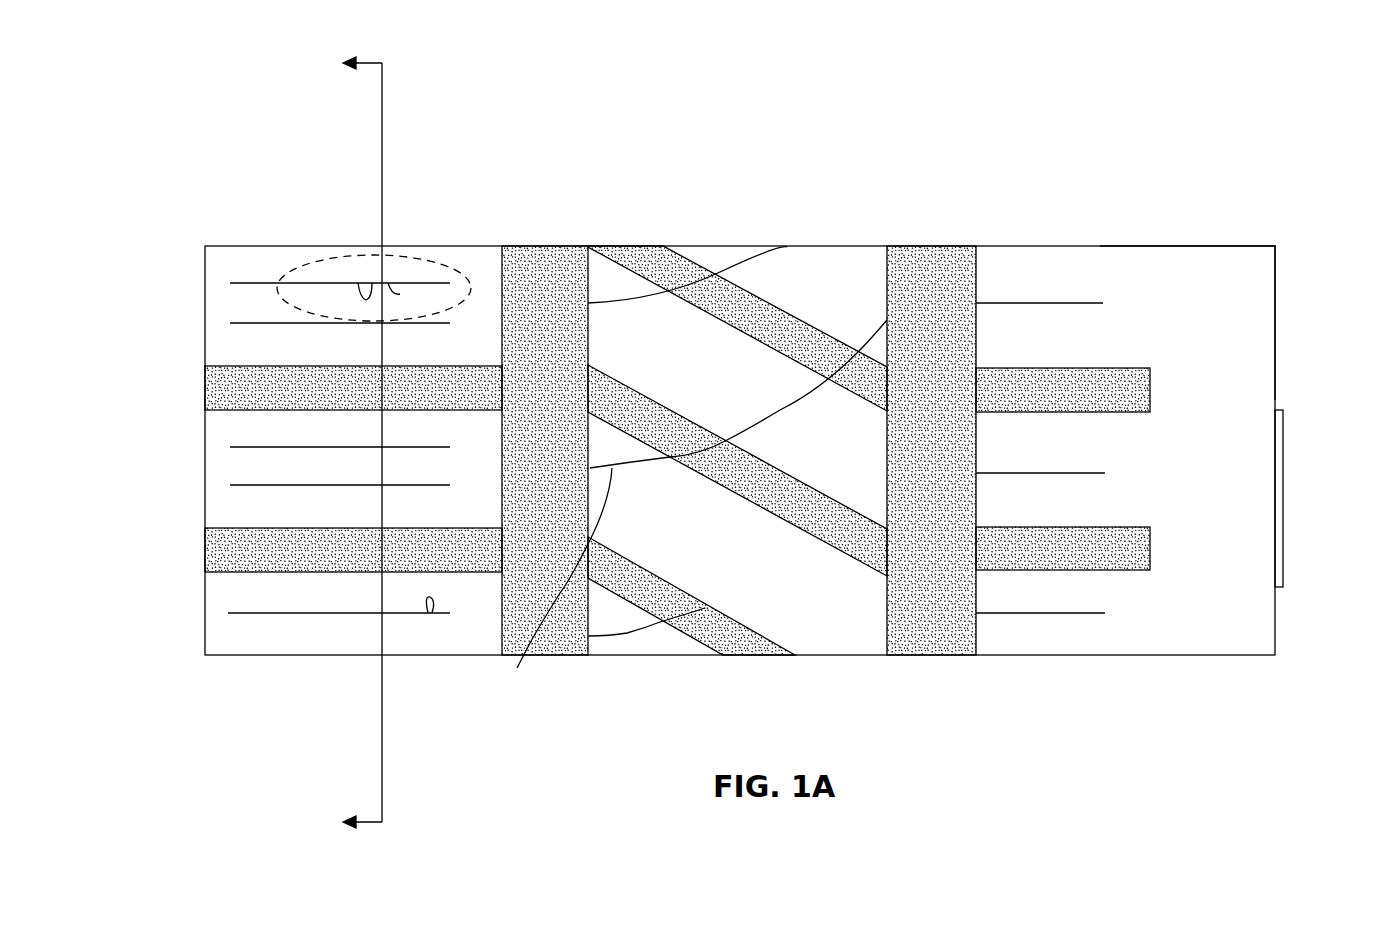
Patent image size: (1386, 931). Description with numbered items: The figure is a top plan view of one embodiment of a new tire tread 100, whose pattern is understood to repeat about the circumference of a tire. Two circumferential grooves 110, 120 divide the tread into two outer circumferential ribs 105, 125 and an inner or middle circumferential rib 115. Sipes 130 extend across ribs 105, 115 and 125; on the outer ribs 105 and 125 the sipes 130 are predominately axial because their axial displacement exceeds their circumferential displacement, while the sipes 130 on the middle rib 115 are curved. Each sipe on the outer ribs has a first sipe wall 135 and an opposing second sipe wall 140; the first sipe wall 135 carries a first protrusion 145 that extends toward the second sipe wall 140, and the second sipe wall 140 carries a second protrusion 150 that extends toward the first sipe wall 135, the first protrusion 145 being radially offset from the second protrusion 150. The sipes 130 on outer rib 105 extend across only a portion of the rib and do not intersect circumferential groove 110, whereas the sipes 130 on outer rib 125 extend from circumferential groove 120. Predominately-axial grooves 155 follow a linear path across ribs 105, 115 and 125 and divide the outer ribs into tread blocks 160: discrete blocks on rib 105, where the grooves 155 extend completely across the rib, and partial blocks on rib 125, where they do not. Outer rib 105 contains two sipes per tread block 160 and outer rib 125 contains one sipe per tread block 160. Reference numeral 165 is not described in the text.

The tire tread 100 is at (238, 136).
The outer circumferential rib 105 is at (253, 278).
The circumferential groove 110 is at (558, 262).
The inner or middle circumferential rib 115 is at (738, 262).
The circumferential groove 120 is at (940, 262).
The outer circumferential rib 125 is at (1163, 246).
The sipes 130 is at (252, 278).
The first sipe wall 135 is at (362, 290).
The second sipe wall 140 is at (330, 283).
The first protrusion 145 is at (448, 292).
The second protrusion 150 is at (392, 283).
The grooves 155 is at (205, 380).
The tread blocks 160 is at (228, 462).
The lower strand 165 is at (228, 627).